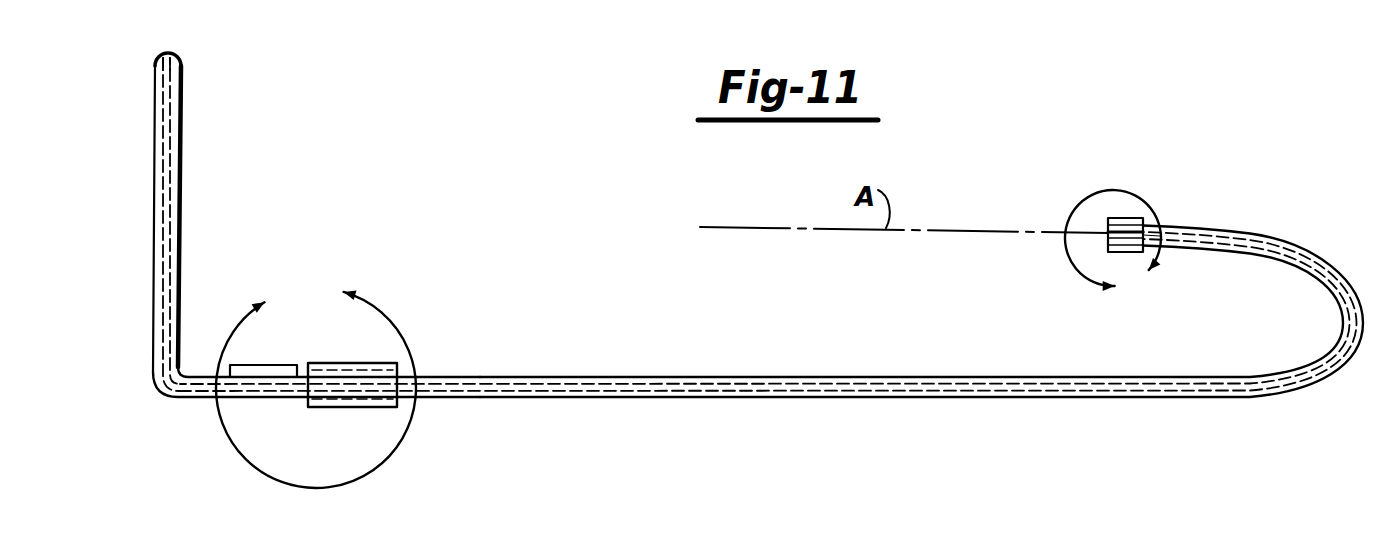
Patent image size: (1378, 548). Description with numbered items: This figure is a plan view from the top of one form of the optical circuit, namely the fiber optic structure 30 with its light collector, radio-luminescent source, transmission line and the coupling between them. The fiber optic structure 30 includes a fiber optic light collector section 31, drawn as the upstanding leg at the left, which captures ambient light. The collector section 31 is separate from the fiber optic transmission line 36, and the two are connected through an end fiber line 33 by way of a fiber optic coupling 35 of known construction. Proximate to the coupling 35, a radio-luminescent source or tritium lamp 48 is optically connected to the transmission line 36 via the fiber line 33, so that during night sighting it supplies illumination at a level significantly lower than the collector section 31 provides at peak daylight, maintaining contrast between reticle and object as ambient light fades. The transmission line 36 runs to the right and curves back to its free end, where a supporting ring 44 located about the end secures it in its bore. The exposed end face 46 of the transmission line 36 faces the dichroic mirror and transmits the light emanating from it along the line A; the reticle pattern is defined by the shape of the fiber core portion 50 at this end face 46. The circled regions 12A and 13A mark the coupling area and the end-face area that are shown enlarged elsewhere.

The fiber optic structure 30 is at (188, 156).
The fiber optic light collector section 31 is at (153, 217).
The end fiber line 33 is at (250, 397).
The fiber optic coupling 35 is at (355, 377).
The fiber optic transmission line 36 is at (482, 398).
The supporting ring 44 is at (1131, 218).
The exposed end face 46 is at (1108, 226).
The tritium lamp 48 is at (267, 372).
The core portion 50 is at (186, 110).
The detail circle 12A is at (316, 372).
The detail circle 13A is at (1122, 256).